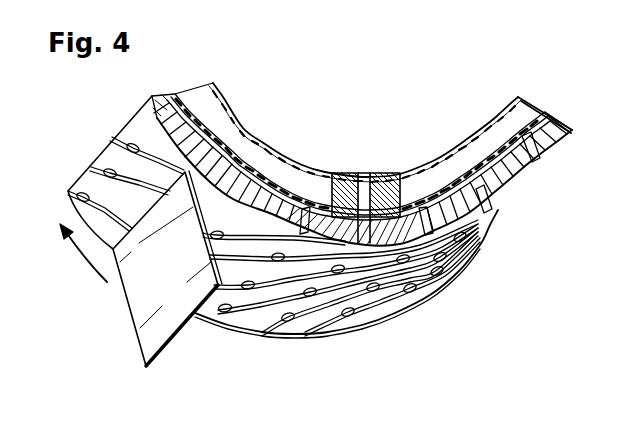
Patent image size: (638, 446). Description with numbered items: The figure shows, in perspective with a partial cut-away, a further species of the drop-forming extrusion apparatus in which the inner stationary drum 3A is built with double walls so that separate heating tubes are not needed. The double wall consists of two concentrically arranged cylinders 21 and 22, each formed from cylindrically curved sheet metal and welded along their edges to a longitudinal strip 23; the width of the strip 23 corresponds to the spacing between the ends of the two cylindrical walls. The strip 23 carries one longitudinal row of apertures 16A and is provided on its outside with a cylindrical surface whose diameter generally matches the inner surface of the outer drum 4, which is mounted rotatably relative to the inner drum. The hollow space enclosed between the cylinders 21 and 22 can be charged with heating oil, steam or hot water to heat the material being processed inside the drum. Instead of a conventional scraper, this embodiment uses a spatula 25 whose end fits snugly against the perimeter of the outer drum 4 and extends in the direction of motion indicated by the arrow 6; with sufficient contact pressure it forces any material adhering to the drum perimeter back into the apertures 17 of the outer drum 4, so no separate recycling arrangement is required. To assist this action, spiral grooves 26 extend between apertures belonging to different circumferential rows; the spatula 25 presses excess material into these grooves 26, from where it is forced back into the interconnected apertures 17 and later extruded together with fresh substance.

The cylinder 21 is at (223, 100).
The cylinder 22 is at (287, 188).
The apertures 16A is at (366, 184).
The longitudinal strip 23 is at (385, 180).
The inner stationary drum 3A is at (438, 170).
The apertures 17 is at (487, 203).
The outer drum 4 is at (420, 262).
The grooves 26 is at (238, 290).
The spatula 25 is at (173, 327).
The arrow 6 is at (88, 272).